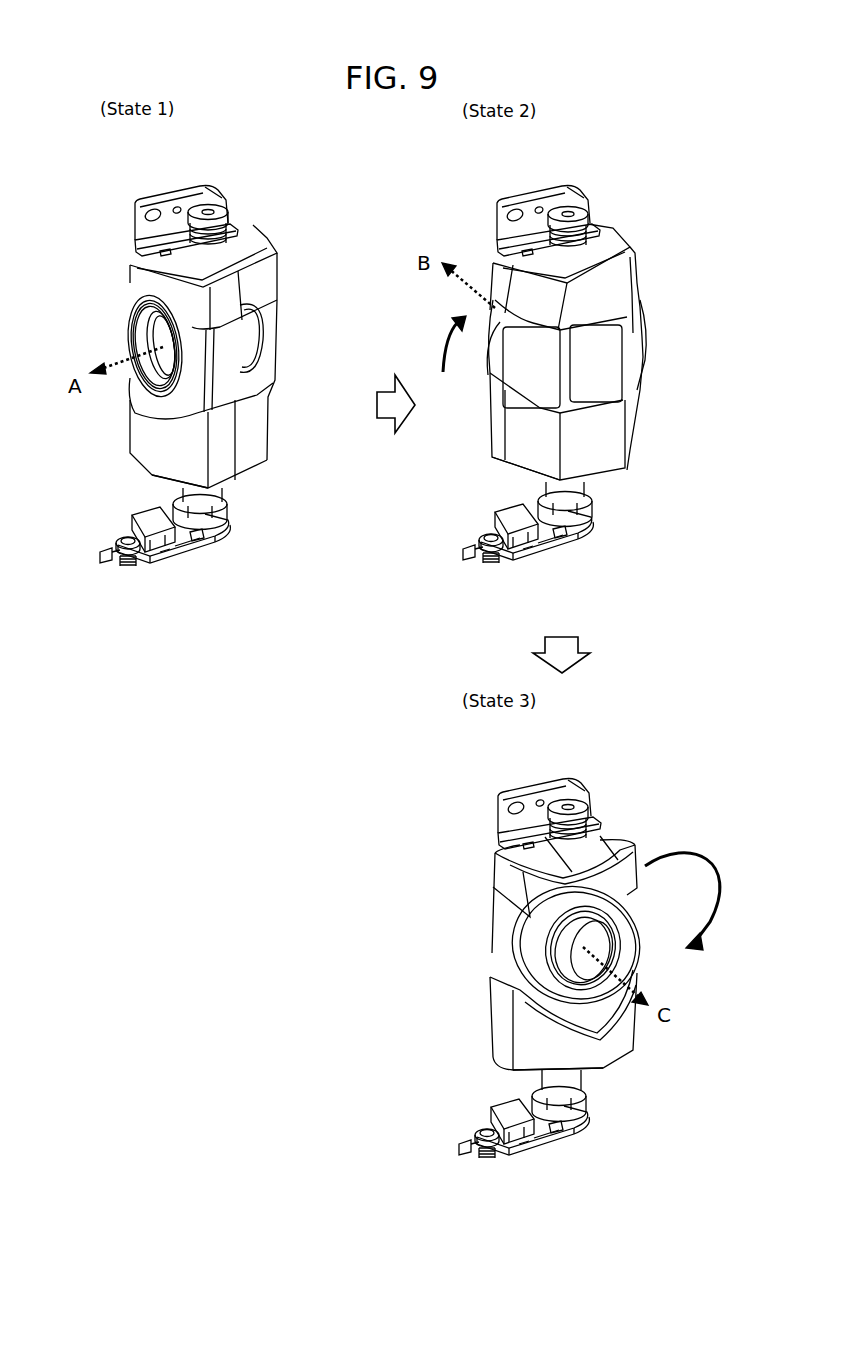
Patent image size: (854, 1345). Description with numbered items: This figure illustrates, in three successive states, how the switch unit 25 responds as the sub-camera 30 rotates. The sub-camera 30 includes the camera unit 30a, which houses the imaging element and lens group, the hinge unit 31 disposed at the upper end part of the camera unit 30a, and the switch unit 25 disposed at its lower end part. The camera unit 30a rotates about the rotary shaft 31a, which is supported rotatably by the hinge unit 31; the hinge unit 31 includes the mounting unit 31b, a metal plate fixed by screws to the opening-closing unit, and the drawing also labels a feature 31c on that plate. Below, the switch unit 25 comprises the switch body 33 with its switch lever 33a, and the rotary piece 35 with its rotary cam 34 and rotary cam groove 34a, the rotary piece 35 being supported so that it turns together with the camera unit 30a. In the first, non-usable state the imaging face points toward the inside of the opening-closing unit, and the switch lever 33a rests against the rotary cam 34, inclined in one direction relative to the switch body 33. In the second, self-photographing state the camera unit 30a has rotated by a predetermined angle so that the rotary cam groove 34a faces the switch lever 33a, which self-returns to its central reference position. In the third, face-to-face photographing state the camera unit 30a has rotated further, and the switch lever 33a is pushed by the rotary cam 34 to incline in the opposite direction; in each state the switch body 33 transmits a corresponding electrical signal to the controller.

The switch unit 25 is at (157, 562).
The sub-camera 30 is at (274, 388).
The camera unit 30a is at (130, 325).
The hinge unit 31 is at (140, 243).
The rotary shaft 31a is at (205, 209).
The mounting unit 31b is at (214, 196).
The bracket hole 31c is at (150, 212).
The switch body 33 is at (150, 516).
The switch lever 33a is at (197, 540).
The rotary cam 34 is at (228, 497).
The rotary cam groove 34a is at (208, 513).
The rotary piece 35 is at (230, 488).